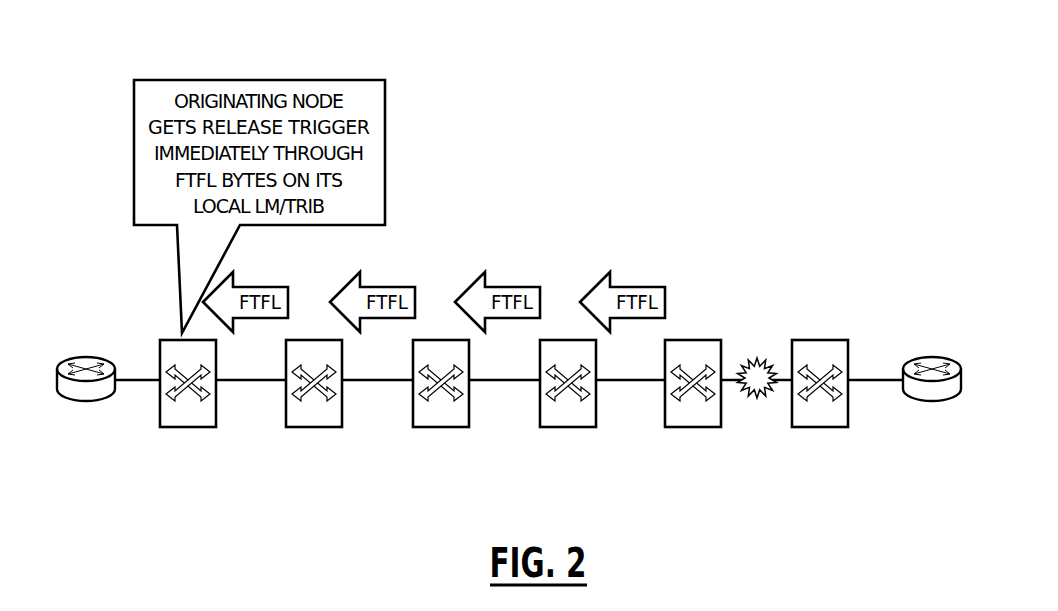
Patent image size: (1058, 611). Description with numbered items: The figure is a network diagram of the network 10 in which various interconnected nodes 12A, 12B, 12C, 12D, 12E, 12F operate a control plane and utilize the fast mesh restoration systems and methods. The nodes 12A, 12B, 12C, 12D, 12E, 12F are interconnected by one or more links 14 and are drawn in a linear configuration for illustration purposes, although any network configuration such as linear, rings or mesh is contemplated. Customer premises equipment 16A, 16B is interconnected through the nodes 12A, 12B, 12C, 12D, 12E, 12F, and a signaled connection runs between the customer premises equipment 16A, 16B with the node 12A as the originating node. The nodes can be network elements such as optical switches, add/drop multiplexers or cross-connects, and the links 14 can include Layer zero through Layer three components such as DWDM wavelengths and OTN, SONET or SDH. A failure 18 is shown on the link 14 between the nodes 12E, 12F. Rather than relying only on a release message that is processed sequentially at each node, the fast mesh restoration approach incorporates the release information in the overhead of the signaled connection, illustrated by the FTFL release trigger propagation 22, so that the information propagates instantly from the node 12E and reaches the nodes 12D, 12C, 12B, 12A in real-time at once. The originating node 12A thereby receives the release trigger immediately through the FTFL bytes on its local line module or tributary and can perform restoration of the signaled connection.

The network 10 is at (640, 84).
The FTFL release trigger propagation 22 is at (636, 254).
The link 14 is at (257, 380).
The failure 18 is at (762, 356).
The node 12A is at (193, 427).
The node 12B is at (319, 427).
The node 12C is at (446, 427).
The node 12D is at (573, 427).
The node 12E is at (698, 427).
The node 12F is at (825, 427).
The customer premises equipment 16A is at (84, 405).
The customer premises equipment 16B is at (922, 404).